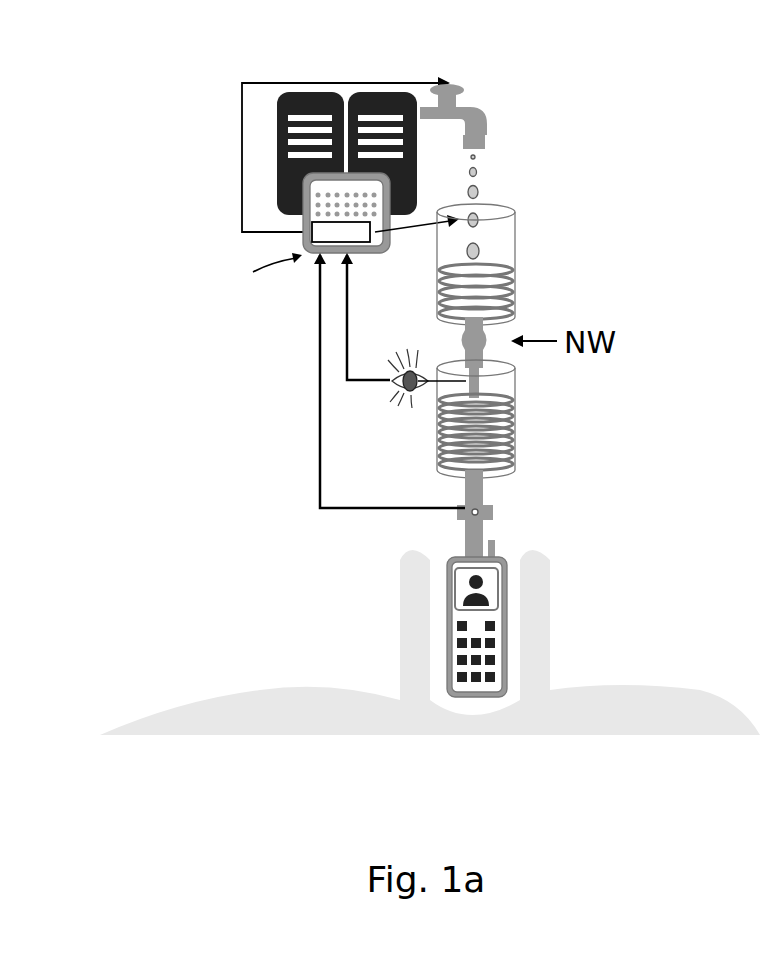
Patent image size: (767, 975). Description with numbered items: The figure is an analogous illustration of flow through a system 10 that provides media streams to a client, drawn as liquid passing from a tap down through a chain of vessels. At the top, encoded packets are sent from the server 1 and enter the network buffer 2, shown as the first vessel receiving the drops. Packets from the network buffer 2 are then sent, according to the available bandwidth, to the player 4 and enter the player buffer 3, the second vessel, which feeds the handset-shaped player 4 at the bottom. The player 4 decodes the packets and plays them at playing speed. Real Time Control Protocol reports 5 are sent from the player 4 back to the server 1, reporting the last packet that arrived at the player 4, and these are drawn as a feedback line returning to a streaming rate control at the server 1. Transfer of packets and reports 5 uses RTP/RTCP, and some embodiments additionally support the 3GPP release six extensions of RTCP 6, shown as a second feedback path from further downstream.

The server 1 is at (343, 90).
The system 10 is at (608, 134).
The network buffer 2 is at (542, 282).
The player buffer 3 is at (545, 412).
The player 4 is at (545, 590).
The RTCP reports 5 is at (370, 387).
The 3GPP release 6 extensions of RTCP 6 is at (387, 512).